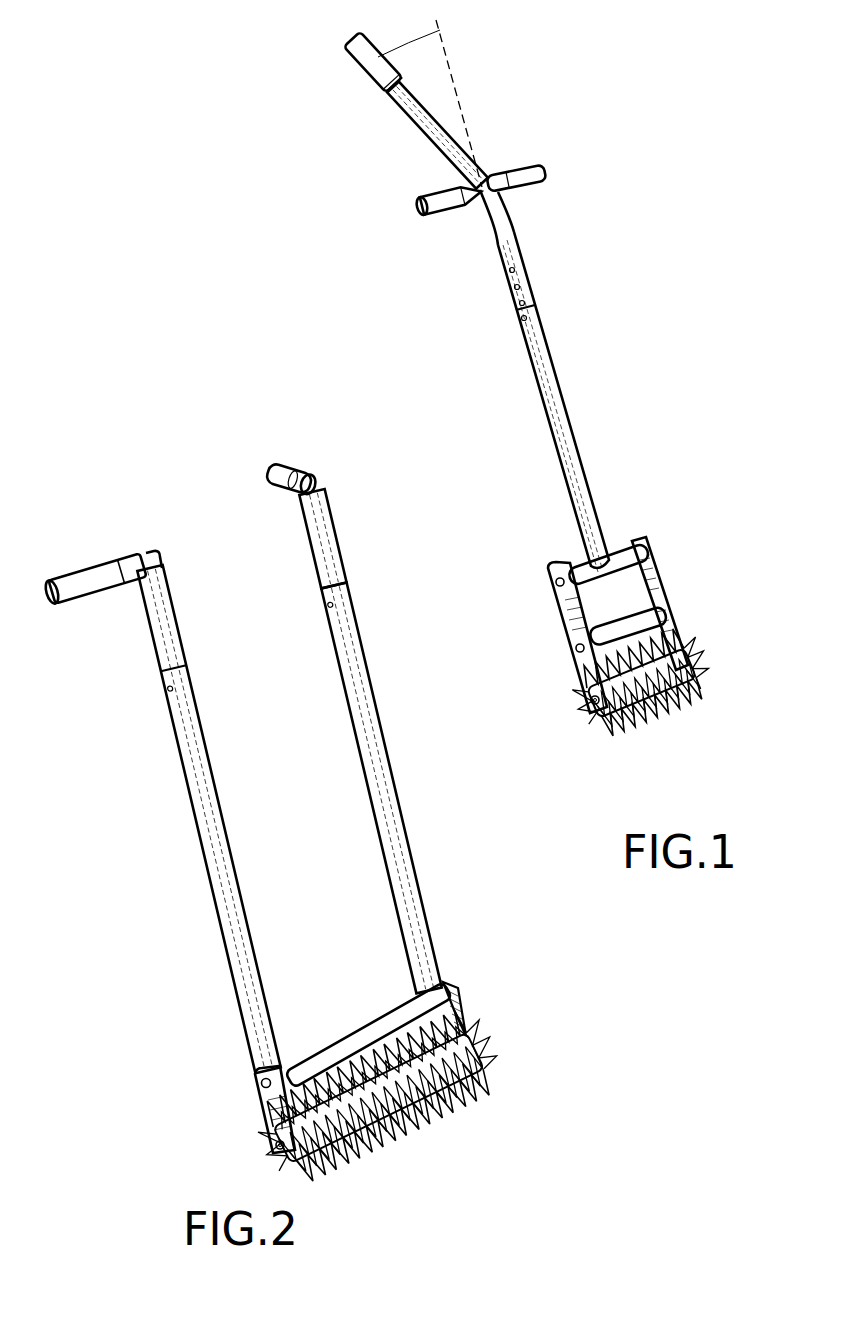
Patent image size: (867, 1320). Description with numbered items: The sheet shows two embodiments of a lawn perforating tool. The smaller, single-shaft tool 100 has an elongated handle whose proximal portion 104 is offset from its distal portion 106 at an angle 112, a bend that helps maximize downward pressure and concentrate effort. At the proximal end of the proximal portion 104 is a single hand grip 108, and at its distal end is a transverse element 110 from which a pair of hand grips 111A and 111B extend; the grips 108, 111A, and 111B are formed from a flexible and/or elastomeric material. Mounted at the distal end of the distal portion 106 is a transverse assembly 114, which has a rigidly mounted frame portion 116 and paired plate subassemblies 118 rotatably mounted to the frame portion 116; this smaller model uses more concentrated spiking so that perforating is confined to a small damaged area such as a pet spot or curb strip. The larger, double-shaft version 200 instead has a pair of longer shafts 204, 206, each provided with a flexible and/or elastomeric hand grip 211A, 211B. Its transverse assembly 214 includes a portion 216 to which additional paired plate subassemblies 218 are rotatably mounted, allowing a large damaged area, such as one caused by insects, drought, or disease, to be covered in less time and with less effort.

In FIG. 1, the lawn perforating tool 100 is at (450, 415).
In FIG. 1, the proximal portion 104 is at (437, 147).
In FIG. 1, the distal portion 106 is at (560, 378).
In FIG. 1, the single hand grip 108 is at (362, 75).
In FIG. 1, the transverse element 110 is at (488, 195).
In FIG. 1, the hand grip 111A is at (446, 212).
In FIG. 1, the hand grip 111B is at (540, 168).
In FIG. 1, the angle 112 is at (410, 40).
In FIG. 1, the transverse assembly 114 is at (621, 665).
In FIG. 1, the frame portion 116 is at (556, 643).
In FIG. 1, the paired plate subassemblies 118 is at (730, 733).
In FIG. 2, the larger version 200 is at (292, 772).
In FIG. 2, the shaft 204 is at (307, 537).
In FIG. 2, the shaft 206 is at (407, 830).
In FIG. 2, the hand grip 211A is at (85, 568).
In FIG. 2, the hand grip 211B is at (286, 460).
In FIG. 2, the transverse assembly 214 is at (336, 1097).
In FIG. 2, the portion 216 is at (268, 1126).
In FIG. 2, the paired plate subassemblies 218 is at (490, 1117).